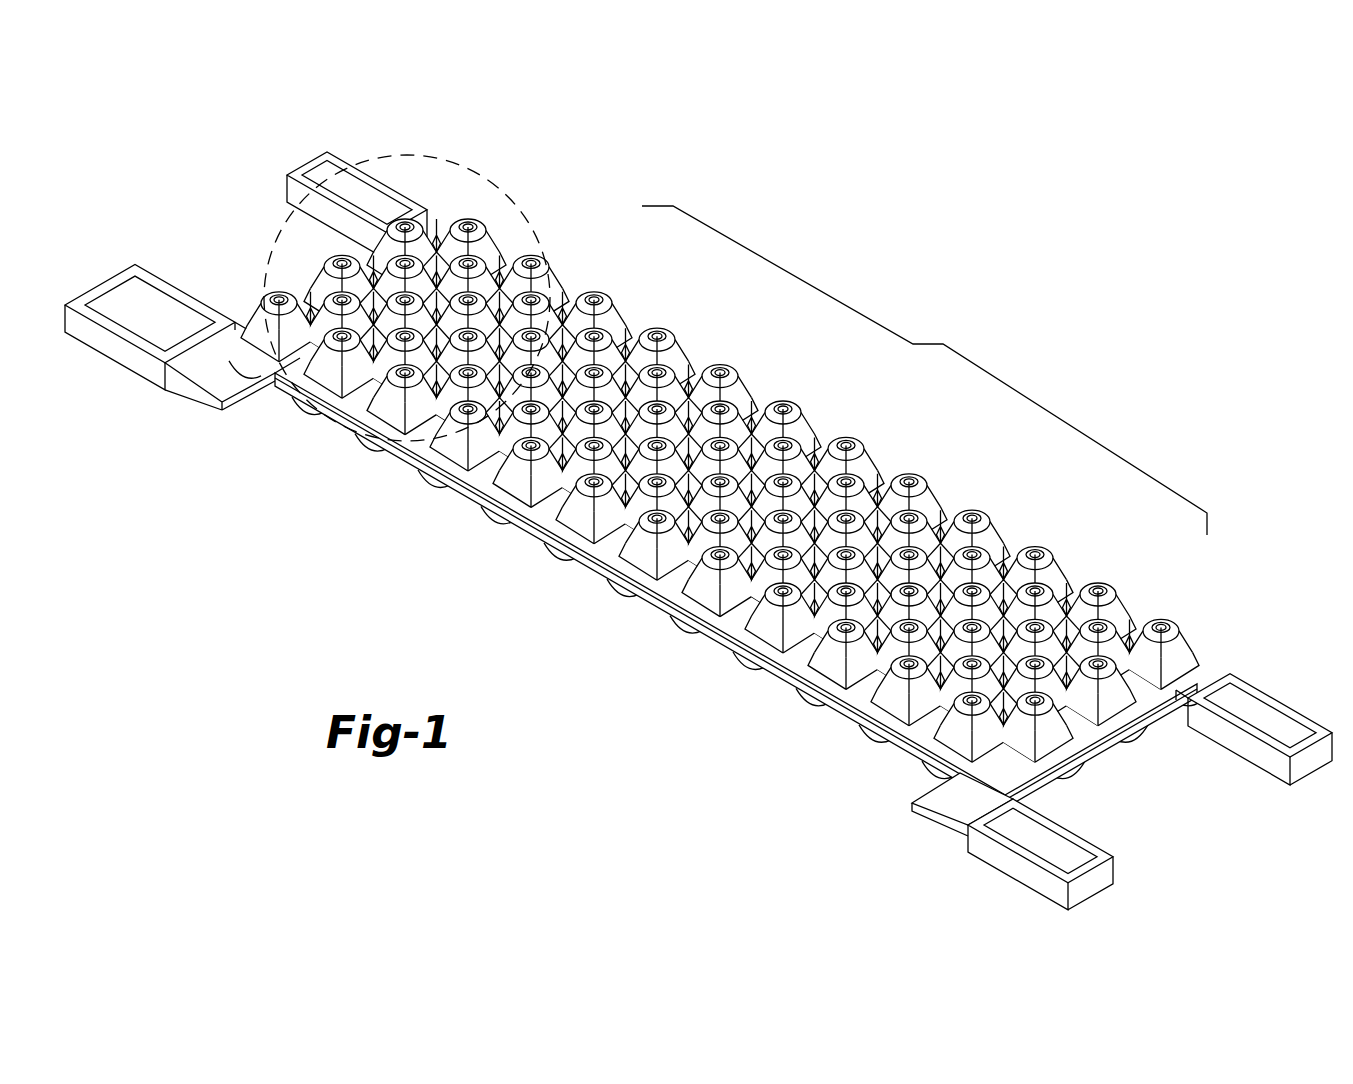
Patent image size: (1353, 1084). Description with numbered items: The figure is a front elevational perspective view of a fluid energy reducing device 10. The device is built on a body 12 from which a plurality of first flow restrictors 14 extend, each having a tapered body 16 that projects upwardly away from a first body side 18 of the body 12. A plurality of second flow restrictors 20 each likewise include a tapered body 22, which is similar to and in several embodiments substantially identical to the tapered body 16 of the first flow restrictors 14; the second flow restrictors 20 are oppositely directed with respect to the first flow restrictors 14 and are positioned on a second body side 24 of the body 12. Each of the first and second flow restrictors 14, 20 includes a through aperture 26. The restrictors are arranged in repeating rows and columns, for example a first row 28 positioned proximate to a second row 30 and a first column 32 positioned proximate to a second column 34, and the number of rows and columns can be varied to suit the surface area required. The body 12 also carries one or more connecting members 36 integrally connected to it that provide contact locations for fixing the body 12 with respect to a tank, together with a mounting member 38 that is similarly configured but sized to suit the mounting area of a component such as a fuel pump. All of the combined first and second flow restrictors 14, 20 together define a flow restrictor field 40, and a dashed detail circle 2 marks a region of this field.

The detail circle 2 is at (520, 197).
The fluid energy reducing device 10 is at (698, 531).
The body 12 is at (756, 590).
The first flow restrictors 14 is at (928, 538).
The tapered body 16 is at (1052, 578).
The first body side 18 is at (1205, 670).
The second flow restrictors 20 is at (549, 545).
The tapered body 22 is at (640, 582).
The second body side 24 is at (453, 491).
The through aperture 26 is at (842, 458).
The first row 28 is at (700, 630).
The second row 30 is at (830, 622).
The first column 32 is at (982, 740).
The second column 34 is at (1050, 735).
The connecting members 36 is at (1258, 700).
The mounting member 38 is at (112, 326).
The flow restrictor field 40 is at (943, 344).